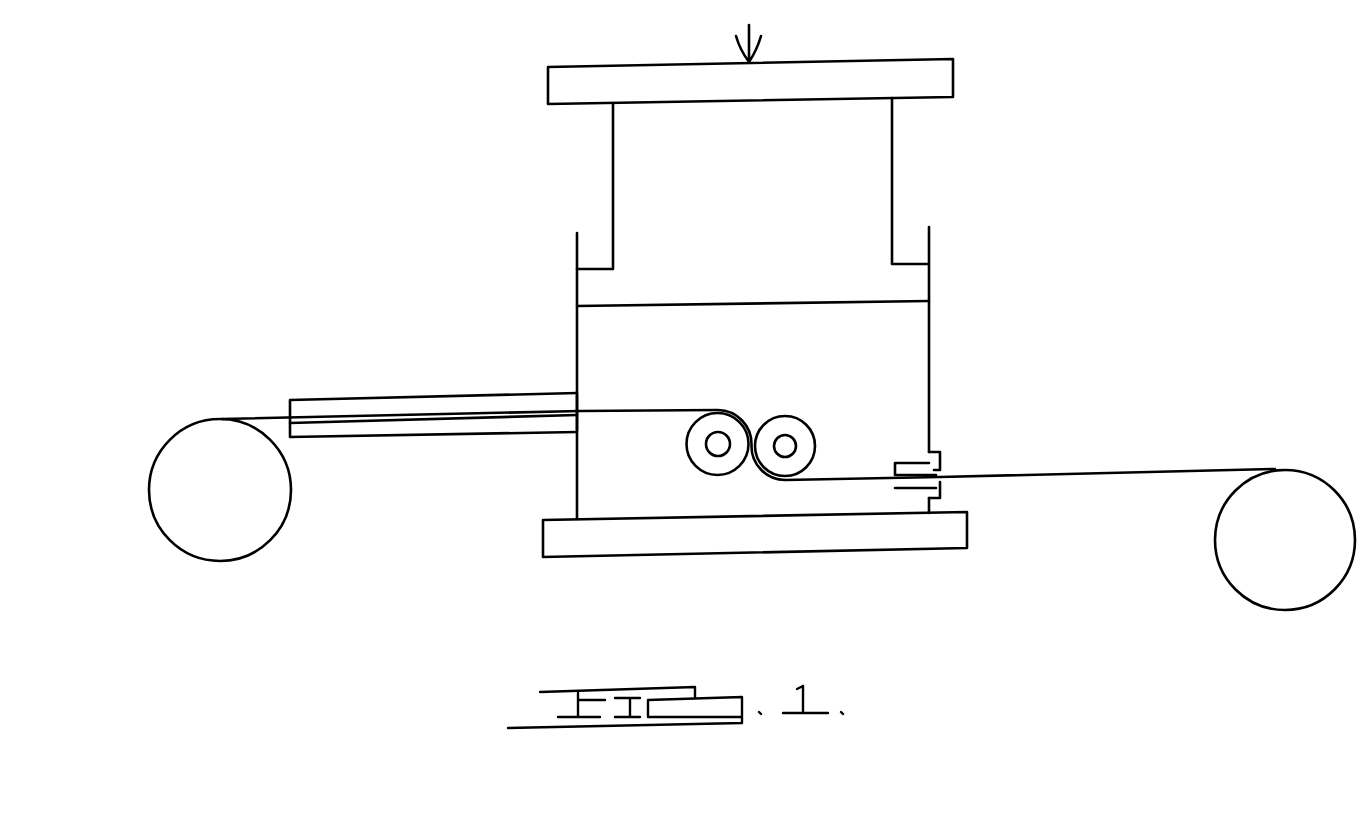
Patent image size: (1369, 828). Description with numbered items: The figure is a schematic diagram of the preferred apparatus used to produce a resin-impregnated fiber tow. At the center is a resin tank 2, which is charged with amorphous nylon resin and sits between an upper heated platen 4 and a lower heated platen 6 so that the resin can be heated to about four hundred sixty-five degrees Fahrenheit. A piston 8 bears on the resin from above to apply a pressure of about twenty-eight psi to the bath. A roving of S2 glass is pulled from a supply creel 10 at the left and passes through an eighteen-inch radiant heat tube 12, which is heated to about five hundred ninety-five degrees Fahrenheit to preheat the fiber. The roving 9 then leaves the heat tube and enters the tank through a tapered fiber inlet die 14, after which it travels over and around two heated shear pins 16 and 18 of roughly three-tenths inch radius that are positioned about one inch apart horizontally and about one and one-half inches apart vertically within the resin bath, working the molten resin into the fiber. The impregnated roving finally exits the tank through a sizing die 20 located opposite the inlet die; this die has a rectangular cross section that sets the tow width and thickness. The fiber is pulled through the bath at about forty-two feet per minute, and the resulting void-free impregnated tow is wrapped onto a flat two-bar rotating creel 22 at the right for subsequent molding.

The resin tank 2 is at (930, 340).
The heated platen 4 is at (948, 73).
The heated platen 6 is at (858, 537).
The piston 8 is at (900, 170).
The web / film 9 is at (247, 418).
The creel 10 is at (197, 560).
The radiant heat tube 12 is at (400, 437).
The tapered fiber inlet die 14 is at (585, 409).
The shear pin 16 is at (702, 460).
The shear pin 18 is at (803, 436).
The sizing die 20 is at (942, 468).
The rotating creel 22 is at (1303, 487).